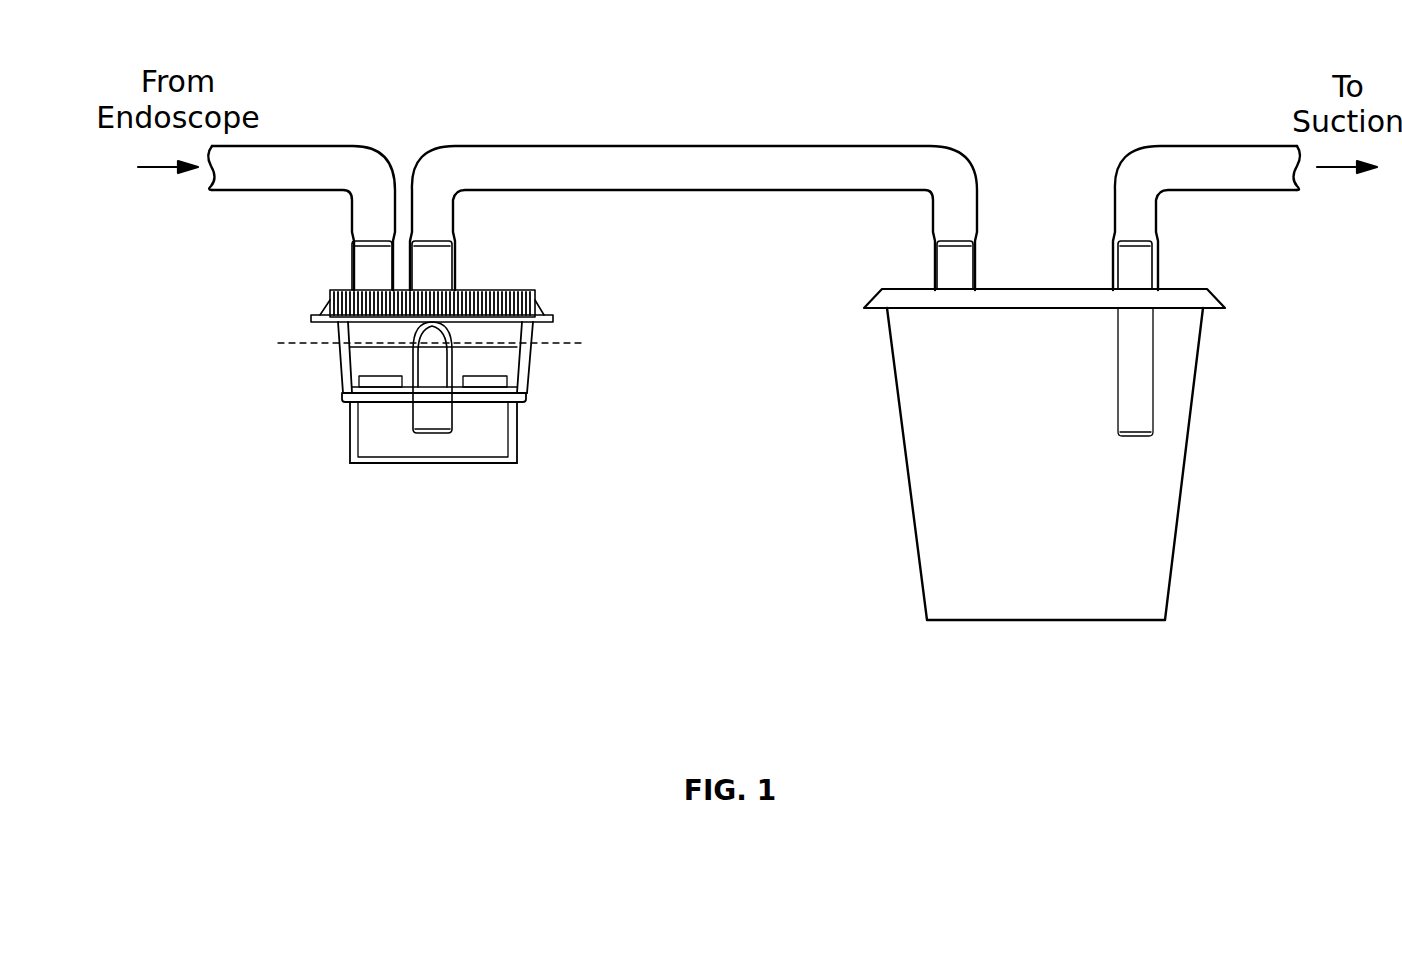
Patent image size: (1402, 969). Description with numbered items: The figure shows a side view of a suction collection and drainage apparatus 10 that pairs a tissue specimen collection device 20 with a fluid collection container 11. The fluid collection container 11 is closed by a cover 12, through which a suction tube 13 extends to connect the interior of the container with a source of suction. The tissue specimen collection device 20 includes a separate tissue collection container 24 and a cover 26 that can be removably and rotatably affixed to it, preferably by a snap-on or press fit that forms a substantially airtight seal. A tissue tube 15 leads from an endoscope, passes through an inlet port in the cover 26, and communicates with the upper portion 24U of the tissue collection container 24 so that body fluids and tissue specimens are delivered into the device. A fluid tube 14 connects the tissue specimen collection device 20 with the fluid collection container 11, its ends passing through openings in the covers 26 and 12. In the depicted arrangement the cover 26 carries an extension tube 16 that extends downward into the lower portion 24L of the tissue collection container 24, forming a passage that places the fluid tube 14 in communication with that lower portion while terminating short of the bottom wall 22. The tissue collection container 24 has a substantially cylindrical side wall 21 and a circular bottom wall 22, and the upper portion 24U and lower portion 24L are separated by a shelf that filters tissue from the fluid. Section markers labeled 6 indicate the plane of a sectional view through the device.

The suction collection and drainage apparatus 10 is at (308, 645).
The fluid collection container 11 is at (1163, 508).
The cover 12 is at (1202, 298).
The suction tube 13 is at (1145, 213).
The fluid tube 14 is at (797, 177).
The tissue tube 15 is at (298, 163).
The extension tube 16 is at (422, 420).
The tissue specimen collection device 20 is at (272, 242).
The cylindrical side wall 21 is at (347, 418).
The bottom wall 22 is at (463, 463).
The tissue collection container 24 is at (481, 407).
The upper portion 24U is at (538, 386).
The lower portion 24L is at (534, 462).
The cover 26 is at (540, 298).
The section line 6- 6 is at (585, 330).